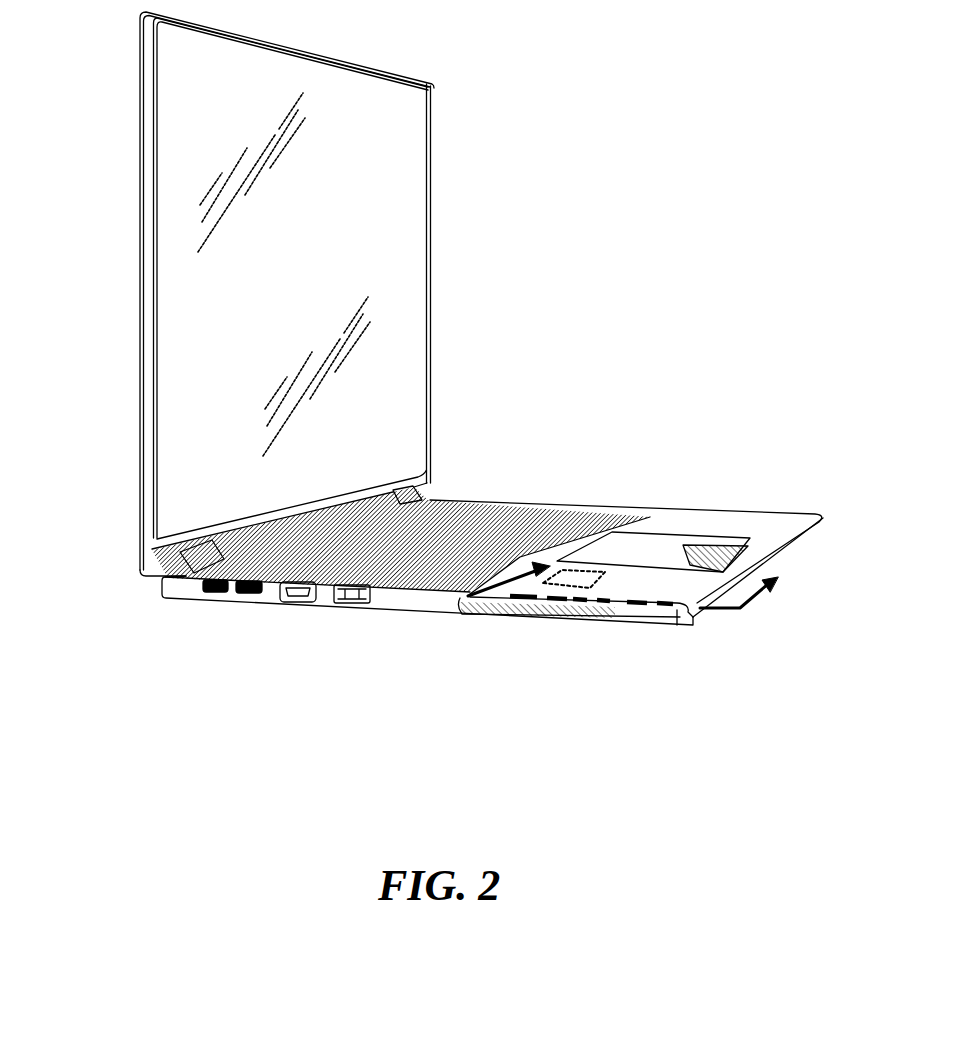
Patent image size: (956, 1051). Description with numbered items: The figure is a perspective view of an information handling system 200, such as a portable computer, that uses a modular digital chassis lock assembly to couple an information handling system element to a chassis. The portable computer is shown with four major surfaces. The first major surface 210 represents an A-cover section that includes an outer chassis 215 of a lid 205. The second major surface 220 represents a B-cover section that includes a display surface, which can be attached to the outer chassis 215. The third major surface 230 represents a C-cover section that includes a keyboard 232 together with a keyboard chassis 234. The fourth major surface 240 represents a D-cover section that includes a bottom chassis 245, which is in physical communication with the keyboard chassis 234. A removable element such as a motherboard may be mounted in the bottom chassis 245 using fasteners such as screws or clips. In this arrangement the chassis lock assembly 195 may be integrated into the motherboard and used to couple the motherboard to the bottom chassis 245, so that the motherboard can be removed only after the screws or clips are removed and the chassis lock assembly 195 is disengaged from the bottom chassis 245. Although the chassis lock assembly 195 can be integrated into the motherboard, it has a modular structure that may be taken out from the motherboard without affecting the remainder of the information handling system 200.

The information handling system 200 is at (434, 395).
The first major surface 210 is at (134, 153).
The outer chassis 215 is at (140, 249).
The lid 205 is at (431, 142).
The second major surface 220 is at (398, 253).
The third major surface 230 is at (680, 503).
The keyboard 232 is at (538, 500).
The keyboard chassis 234 is at (725, 514).
The chassis lock assembly 195 is at (603, 578).
The fourth major surface 240 is at (464, 628).
The bottom chassis 245 is at (325, 610).